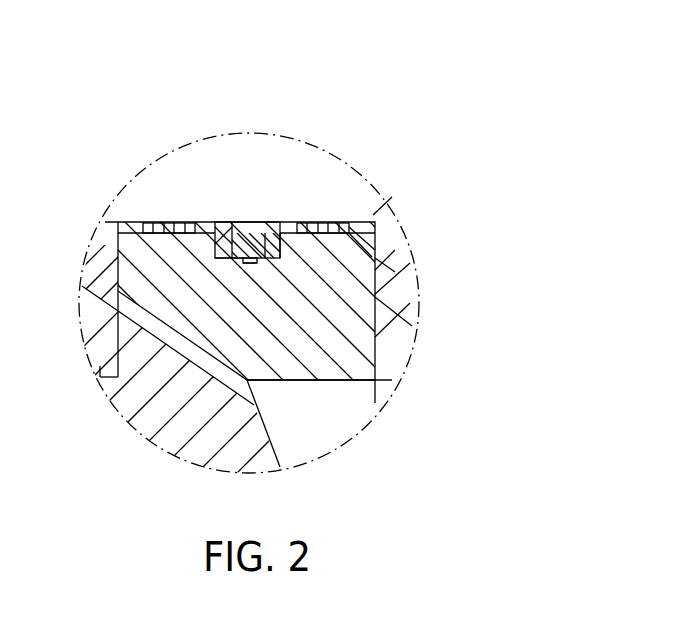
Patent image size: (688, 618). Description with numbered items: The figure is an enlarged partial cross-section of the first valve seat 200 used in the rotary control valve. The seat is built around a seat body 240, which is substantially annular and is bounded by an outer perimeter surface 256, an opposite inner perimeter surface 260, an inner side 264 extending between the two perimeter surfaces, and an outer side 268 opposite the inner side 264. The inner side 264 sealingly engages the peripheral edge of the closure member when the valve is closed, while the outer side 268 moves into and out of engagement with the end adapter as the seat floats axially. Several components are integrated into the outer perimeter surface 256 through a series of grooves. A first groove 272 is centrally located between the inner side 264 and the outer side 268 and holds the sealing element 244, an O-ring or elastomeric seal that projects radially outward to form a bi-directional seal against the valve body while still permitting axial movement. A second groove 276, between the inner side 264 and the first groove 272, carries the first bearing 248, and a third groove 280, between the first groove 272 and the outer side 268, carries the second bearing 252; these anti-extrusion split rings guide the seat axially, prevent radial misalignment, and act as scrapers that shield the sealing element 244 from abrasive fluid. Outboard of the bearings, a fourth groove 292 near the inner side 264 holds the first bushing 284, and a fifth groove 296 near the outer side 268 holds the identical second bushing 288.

The first valve seat 200 is at (446, 84).
The seat body 240 is at (246, 392).
The sealing element 244 is at (245, 212).
The first bearing 248 is at (217, 212).
The second bearing 252 is at (276, 212).
The outer perimeter surface 256 is at (378, 213).
The inner perimeter surface 260 is at (323, 384).
The inner side 264 is at (86, 298).
The outer side 268 is at (412, 326).
The first groove 272 is at (252, 262).
The second groove 276 is at (213, 237).
The third groove 280 is at (281, 240).
The first bushing 284 is at (152, 212).
The second bushing 288 is at (343, 212).
The fourth groove 292 is at (135, 221).
The fifth groove 296 is at (410, 263).